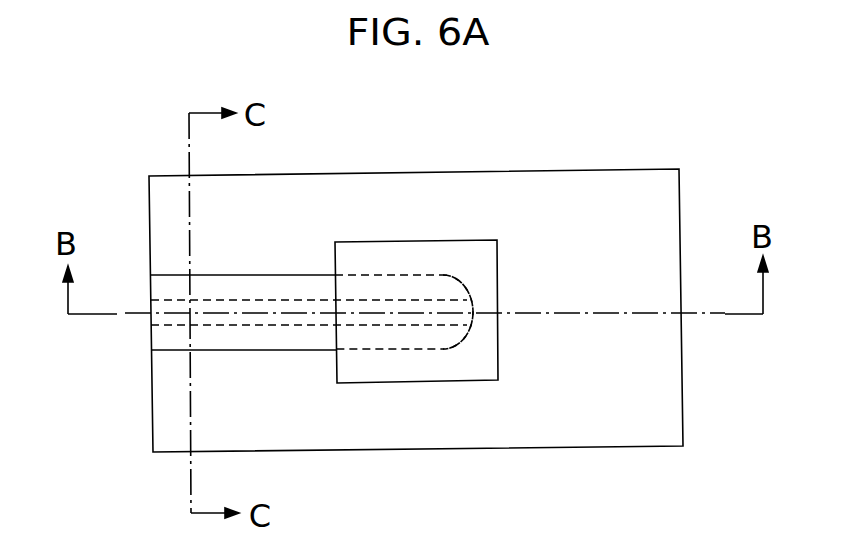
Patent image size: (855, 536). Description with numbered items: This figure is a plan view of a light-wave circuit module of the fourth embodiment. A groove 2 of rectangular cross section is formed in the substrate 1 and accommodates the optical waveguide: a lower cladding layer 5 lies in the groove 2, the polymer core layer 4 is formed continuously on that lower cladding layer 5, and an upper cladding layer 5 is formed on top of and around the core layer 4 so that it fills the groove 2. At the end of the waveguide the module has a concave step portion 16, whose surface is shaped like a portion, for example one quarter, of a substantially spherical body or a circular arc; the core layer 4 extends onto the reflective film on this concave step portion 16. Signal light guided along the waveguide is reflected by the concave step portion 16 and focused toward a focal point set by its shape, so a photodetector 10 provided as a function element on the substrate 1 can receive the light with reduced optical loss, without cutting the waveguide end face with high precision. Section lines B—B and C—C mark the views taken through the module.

The substrate 1 is at (653, 218).
The groove 2 is at (167, 327).
The core layer 4 is at (358, 300).
The cladding layer 5 is at (264, 285).
The photodetector 10 is at (448, 241).
The concave step portion 16 is at (462, 281).